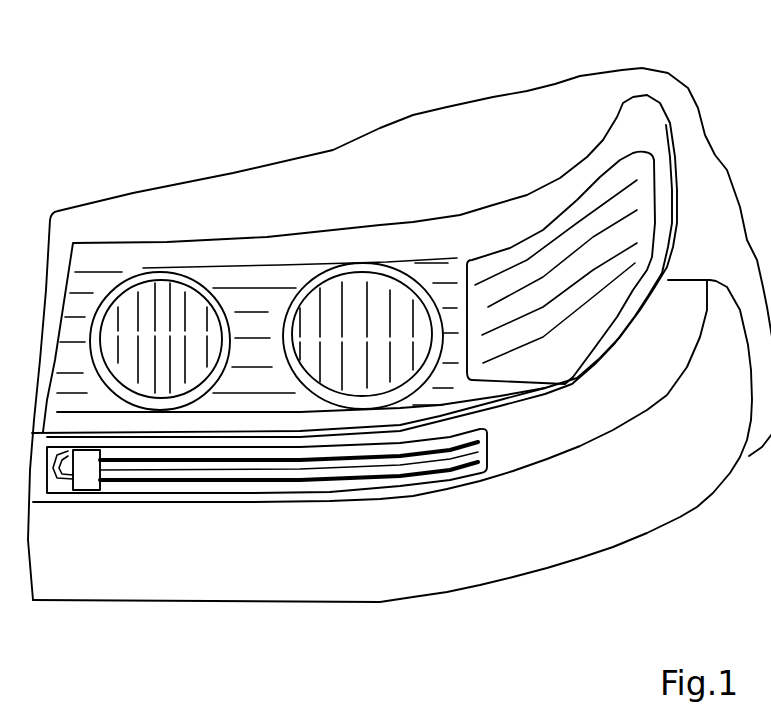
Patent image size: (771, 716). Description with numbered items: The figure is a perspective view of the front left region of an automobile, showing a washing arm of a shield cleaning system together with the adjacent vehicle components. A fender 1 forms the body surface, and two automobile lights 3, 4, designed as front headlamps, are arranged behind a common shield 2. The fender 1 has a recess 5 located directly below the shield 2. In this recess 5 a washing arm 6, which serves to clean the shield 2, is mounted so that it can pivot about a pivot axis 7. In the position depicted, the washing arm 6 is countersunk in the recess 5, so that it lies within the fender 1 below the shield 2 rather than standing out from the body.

The fender 1 is at (521, 555).
The shield 2 is at (268, 290).
The automobile light 3 is at (160, 298).
The automobile light 4 is at (387, 308).
The recess 5 is at (233, 497).
The washing arm 6 is at (325, 482).
The pivot axis 7 is at (86, 443).